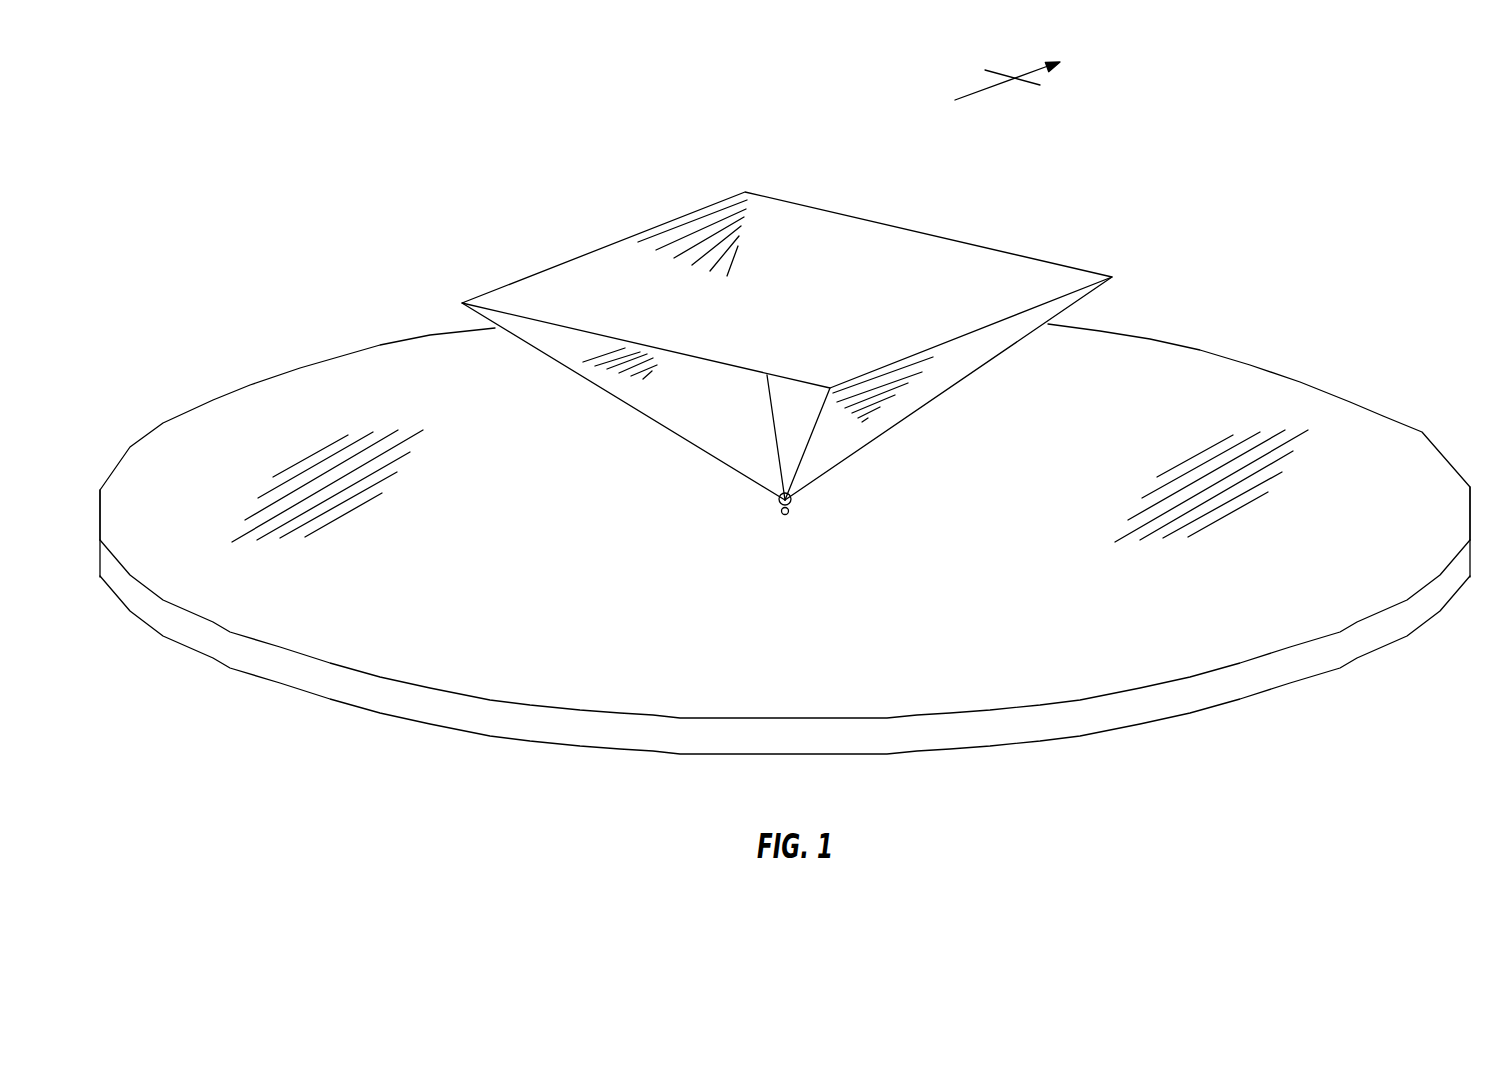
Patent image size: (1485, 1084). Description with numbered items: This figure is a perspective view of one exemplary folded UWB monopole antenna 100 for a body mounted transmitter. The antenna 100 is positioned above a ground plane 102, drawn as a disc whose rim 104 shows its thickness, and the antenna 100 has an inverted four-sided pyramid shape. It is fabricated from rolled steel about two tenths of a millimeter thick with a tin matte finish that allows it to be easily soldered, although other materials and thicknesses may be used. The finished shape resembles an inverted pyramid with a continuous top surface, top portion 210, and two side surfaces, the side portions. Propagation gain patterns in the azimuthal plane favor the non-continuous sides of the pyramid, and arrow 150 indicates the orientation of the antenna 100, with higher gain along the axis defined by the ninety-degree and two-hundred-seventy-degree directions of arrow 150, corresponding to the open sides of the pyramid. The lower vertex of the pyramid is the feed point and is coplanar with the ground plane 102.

The folded UWB monopole antenna 100 is at (465, 200).
The ground plane 102 is at (781, 639).
The platform rim 104 is at (318, 680).
The arrow 150 is at (1023, 73).
The top portion 210 is at (1007, 277).